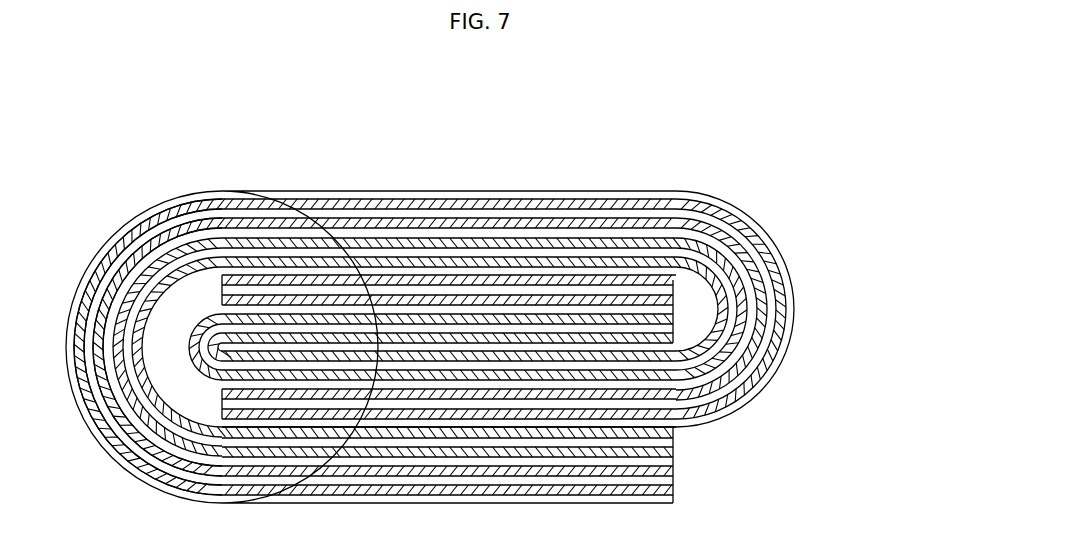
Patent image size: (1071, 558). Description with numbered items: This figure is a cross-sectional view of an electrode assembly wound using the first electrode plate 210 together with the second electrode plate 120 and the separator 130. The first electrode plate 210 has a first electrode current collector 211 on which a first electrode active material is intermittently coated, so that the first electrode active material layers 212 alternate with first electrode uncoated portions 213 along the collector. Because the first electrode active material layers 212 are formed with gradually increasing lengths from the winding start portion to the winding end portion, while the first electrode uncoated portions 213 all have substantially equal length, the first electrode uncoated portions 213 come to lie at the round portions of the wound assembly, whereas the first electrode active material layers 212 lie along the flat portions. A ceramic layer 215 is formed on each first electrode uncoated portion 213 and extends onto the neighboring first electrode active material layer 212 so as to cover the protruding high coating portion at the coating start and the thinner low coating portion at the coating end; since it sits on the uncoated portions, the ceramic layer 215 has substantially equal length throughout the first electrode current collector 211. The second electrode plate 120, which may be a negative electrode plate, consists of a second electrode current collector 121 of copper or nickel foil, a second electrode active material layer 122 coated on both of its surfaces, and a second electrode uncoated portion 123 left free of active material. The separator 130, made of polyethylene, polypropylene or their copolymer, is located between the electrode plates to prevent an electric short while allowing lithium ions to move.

The second electrode plate 120 is at (863, 318).
The second electrode current collector 121 is at (650, 328).
The second electrode active material layer 122 is at (725, 394).
The second electrode uncoated portion 123 is at (637, 343).
The separator 130 is at (673, 498).
The first electrode plate 210 is at (240, 111).
The first electrode current collector 211 is at (173, 226).
The first electrode active material layer 212 is at (222, 208).
The first electrode uncoated portion 213 is at (95, 257).
The ceramic layer 215 is at (100, 264).